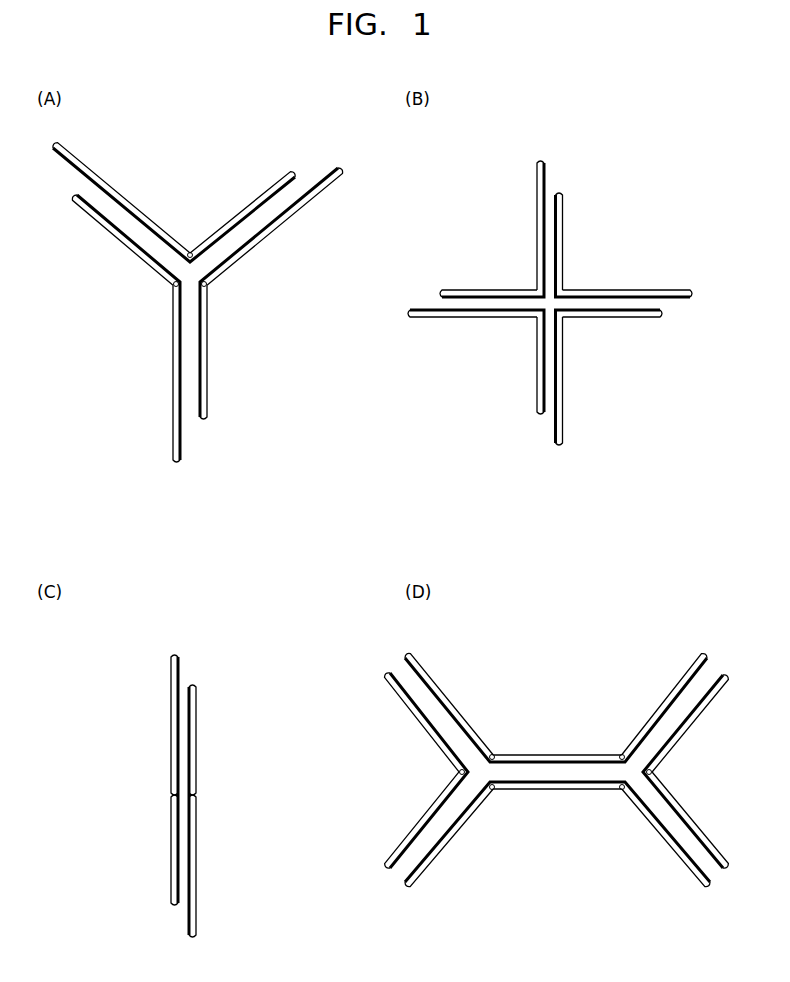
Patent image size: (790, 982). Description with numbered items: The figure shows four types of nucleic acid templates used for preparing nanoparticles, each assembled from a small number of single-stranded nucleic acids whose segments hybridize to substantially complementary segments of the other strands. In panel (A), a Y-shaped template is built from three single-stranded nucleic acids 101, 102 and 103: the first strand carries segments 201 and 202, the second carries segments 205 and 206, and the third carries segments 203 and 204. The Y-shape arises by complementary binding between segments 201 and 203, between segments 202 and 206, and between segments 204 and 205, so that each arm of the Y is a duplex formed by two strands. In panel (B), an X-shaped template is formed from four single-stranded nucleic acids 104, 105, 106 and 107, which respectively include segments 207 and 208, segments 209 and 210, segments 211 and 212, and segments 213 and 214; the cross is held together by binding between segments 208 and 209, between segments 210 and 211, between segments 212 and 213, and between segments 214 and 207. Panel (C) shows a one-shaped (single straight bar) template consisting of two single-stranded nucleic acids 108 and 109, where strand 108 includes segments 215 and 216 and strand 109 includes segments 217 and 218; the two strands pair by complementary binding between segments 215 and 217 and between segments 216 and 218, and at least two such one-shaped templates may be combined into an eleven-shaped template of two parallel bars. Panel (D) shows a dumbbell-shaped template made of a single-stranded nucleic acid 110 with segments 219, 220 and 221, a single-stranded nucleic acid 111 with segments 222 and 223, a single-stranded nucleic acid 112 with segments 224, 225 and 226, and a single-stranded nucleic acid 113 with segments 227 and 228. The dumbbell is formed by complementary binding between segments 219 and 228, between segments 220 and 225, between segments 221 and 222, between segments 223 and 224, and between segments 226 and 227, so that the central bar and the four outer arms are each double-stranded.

The single-stranded nucleic acid 101 is at (295, 177).
The single-stranded nucleic acid 102 is at (338, 168).
The single-stranded nucleic acid 103 is at (180, 460).
The single-stranded nucleic acid 104 is at (442, 296).
The single-stranded nucleic acid 105 is at (557, 194).
The single-stranded nucleic acid 106 is at (660, 310).
The single-stranded nucleic acid 107 is at (544, 412).
The single-stranded nucleic acid 108 is at (178, 657).
The single-stranded nucleic acid 109 is at (189, 687).
The single-stranded nucleic acid 110 is at (405, 658).
The single-stranded nucleic acid 111 is at (725, 673).
The single-stranded nucleic acid 112 is at (710, 882).
The single-stranded nucleic acid 113 is at (390, 868).
The segment 201 is at (130, 204).
The segment 202 is at (236, 217).
The segment 203 is at (121, 241).
The segment 204 is at (173, 372).
The segment 205 is at (207, 348).
The segment 206 is at (277, 228).
The segment 207 is at (494, 290).
The segment 208 is at (537, 231).
The segment 209 is at (562, 246).
The segment 210 is at (624, 290).
The segment 211 is at (606, 317).
The segment 212 is at (562, 376).
The segment 213 is at (537, 361).
The segment 214 is at (478, 317).
The segment 215 is at (171, 725).
The segment 216 is at (171, 850).
The segment 217 is at (196, 739).
The segment 218 is at (196, 866).
The segment 219 is at (455, 709).
The segment 220 is at (557, 755).
The segment 221 is at (655, 713).
The segment 222 is at (689, 726).
The segment 223 is at (689, 818).
The segment 224 is at (655, 828).
The segment 225 is at (559, 789).
The segment 226 is at (455, 833).
The segment 227 is at (424, 816).
The segment 228 is at (424, 726).